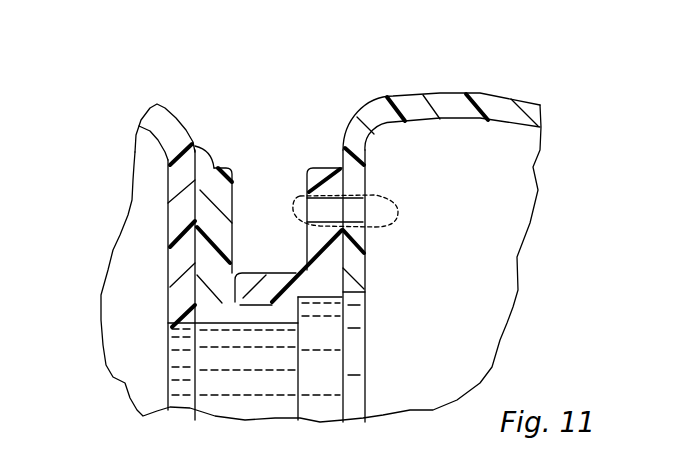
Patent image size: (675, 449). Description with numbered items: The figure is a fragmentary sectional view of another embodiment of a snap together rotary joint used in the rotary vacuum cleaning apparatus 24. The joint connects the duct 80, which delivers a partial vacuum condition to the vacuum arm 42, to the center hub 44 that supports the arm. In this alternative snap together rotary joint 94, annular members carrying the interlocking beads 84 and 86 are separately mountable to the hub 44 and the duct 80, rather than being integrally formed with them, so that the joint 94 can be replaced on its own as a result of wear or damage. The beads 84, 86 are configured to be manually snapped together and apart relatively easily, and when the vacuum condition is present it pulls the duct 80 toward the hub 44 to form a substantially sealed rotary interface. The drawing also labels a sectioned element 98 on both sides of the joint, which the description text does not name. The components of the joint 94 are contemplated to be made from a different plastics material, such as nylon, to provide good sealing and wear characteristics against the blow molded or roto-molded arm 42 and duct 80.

The rotary vacuum cleaning apparatus 24 is at (541, 78).
The vacuum arm 42 is at (158, 134).
The center hub 44 is at (168, 237).
The duct 80 is at (485, 93).
The bead 84 is at (173, 316).
The bead 86 is at (297, 293).
The snap together rotary joint 94 is at (268, 258).
The seal 98 is at (193, 144).